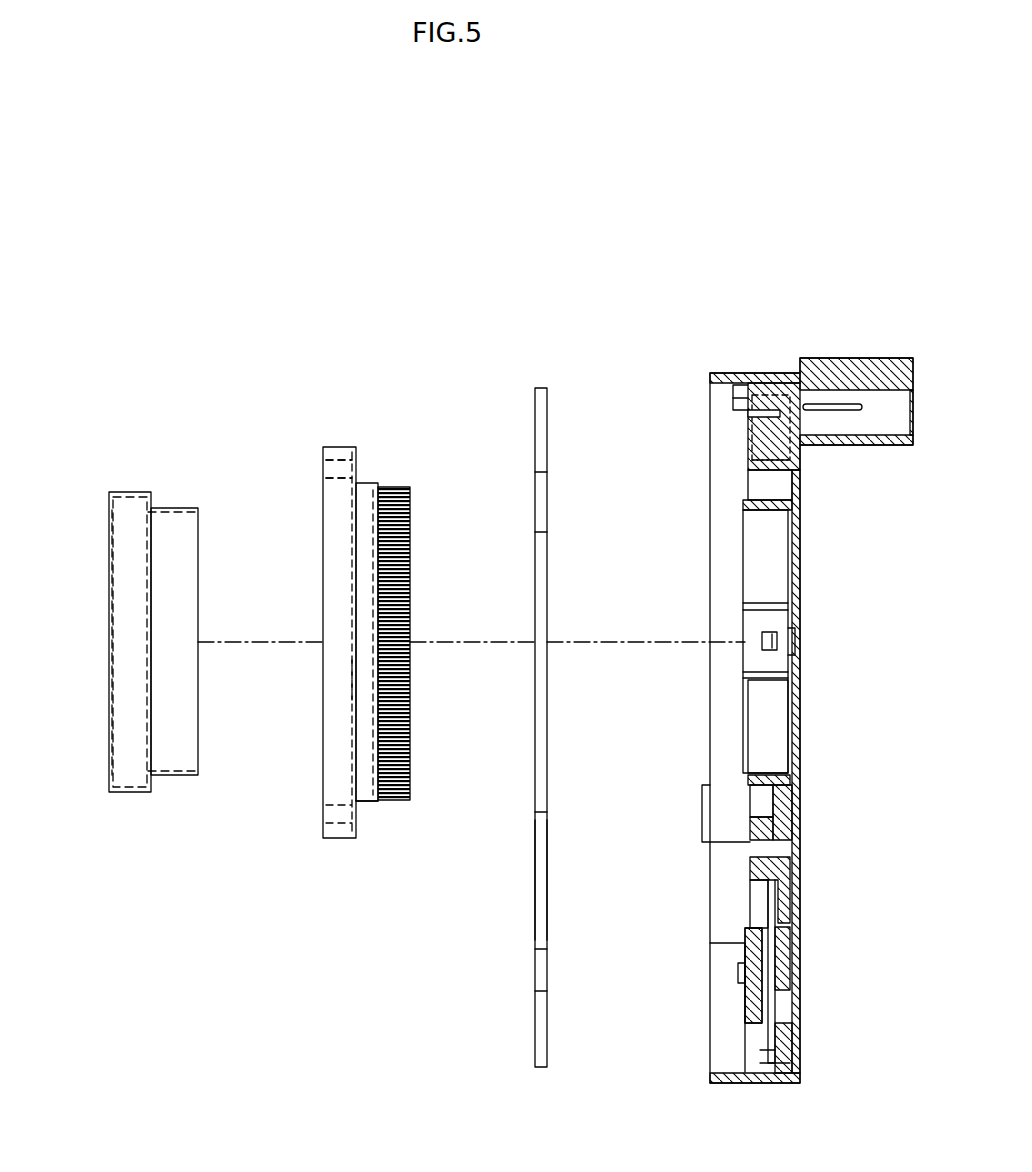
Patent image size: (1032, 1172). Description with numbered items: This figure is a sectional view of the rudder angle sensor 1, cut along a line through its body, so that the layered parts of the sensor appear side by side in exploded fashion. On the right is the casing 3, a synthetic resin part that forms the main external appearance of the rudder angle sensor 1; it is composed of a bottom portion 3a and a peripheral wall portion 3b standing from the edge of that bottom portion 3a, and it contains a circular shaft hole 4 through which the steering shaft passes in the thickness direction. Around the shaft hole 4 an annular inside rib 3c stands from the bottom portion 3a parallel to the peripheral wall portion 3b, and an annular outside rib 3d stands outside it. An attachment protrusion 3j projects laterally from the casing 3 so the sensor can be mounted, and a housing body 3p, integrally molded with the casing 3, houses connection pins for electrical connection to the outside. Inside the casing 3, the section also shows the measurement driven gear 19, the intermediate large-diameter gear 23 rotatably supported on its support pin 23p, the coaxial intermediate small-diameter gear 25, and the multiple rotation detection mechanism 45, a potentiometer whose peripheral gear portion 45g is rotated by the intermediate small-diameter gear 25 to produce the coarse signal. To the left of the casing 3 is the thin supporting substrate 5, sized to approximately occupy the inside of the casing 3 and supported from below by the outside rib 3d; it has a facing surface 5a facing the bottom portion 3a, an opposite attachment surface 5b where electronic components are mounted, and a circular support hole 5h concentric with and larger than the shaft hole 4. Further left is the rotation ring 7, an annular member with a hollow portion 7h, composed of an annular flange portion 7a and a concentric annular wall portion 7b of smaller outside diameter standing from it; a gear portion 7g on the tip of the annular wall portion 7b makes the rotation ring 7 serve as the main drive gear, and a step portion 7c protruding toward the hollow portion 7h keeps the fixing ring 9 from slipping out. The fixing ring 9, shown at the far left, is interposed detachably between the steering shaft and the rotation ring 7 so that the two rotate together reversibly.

The rudder angle sensor 1 is at (689, 212).
The casing 3 is at (807, 327).
The bottom portion 3a is at (746, 434).
The peripheral wall portion 3b is at (710, 592).
The inside rib 3c is at (743, 536).
The outside rib 3d is at (746, 470).
The attachment protrusion 3j is at (702, 783).
The housing body 3p is at (746, 386).
The shaft hole 4 is at (126, 645).
The supporting substrate 5 is at (543, 365).
The facing surface 5a is at (547, 887).
The attachment surface 5b is at (535, 887).
The support hole 5h is at (535, 532).
The rotation ring 7 is at (377, 422).
The annular flange portion 7a is at (337, 752).
The annular wall portion 7b is at (358, 803).
The step portion 7c is at (352, 536).
The gear portion 7g is at (396, 801).
The hollow portion 7h is at (350, 682).
The fixing ring 9 is at (162, 468).
The measurement driven gear 19 is at (750, 808).
The intermediate large-diameter gear 23 is at (760, 965).
The support pin 23p is at (750, 858).
The intermediate small-diameter gear 25 is at (750, 826).
The multiple rotation detection mechanism 45 is at (745, 1000).
The gear portion 45g is at (750, 888).